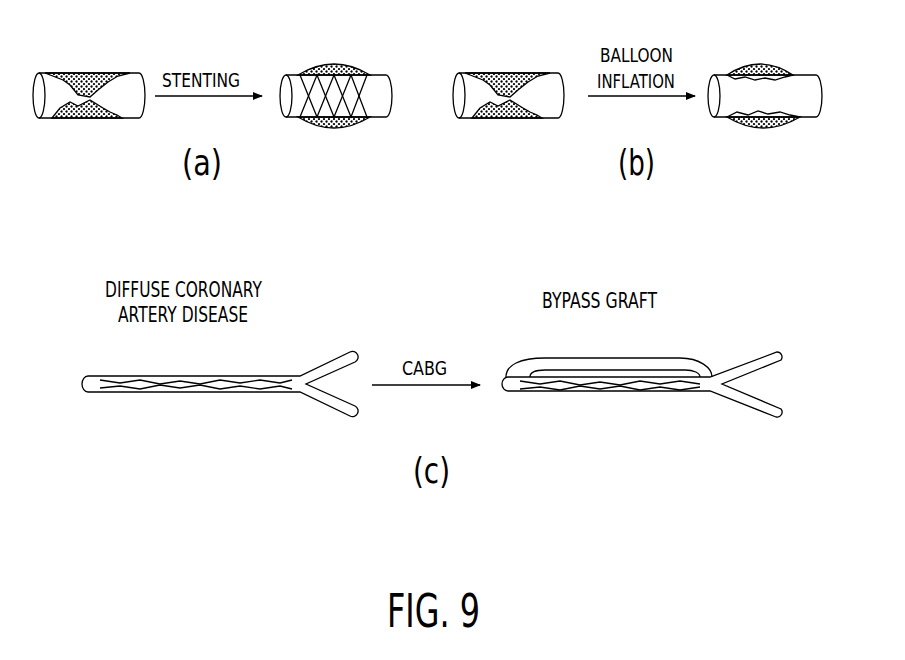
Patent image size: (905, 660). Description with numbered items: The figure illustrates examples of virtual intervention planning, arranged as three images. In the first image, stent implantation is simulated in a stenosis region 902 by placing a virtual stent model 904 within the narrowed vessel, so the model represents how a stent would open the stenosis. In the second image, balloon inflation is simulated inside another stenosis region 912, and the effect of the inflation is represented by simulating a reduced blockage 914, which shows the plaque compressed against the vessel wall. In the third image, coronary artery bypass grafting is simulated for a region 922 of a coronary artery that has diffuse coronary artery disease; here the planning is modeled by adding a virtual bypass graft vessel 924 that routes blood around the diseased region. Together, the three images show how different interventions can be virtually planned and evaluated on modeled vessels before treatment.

The stenosis region 902 is at (83, 72).
The virtual stent model 904 is at (343, 87).
The stenosis region 912 is at (508, 87).
The reduced blockage 914 is at (758, 117).
The region of a coronary artery having diffuse coronary artery disease 922 is at (195, 380).
The virtual bypass graft vessel 924 is at (610, 365).